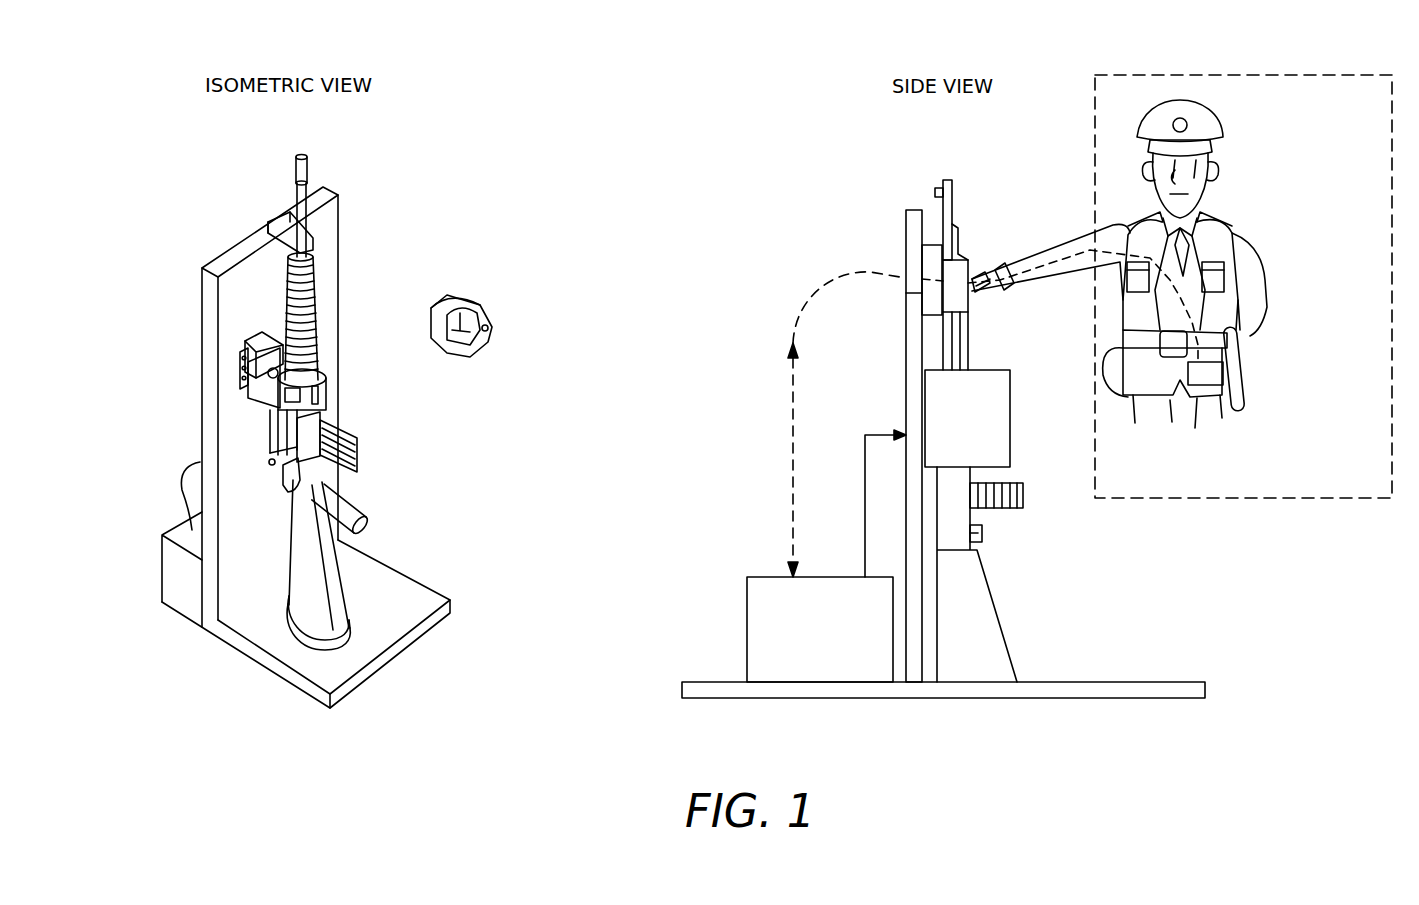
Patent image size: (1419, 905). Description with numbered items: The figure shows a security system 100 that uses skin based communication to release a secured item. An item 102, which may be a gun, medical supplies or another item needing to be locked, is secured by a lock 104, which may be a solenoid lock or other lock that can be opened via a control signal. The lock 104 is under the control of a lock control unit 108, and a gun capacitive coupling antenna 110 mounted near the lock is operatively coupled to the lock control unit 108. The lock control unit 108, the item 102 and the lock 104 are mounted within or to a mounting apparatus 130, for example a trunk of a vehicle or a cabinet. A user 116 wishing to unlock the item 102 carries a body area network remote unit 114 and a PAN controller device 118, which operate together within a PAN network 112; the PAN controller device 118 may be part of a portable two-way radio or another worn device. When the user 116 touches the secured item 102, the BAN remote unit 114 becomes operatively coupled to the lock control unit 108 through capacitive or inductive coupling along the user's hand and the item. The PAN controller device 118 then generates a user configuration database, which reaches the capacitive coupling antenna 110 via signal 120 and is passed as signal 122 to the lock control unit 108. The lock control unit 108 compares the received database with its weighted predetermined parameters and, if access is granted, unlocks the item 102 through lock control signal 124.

The security system 100 is at (1203, 731).
The item 102 is at (313, 603).
The lock 104 is at (342, 381).
The lock control unit 108 is at (160, 503).
The gun capacitive coupling antenna 110 is at (930, 267).
The PAN network 112 is at (1288, 74).
The BAN remote unit 114 is at (1191, 423).
The user 116 is at (1238, 252).
The PAN controller device 118 is at (1248, 388).
The signal 120 is at (1025, 272).
The signal 122 is at (821, 363).
The lock control signal 124 is at (864, 491).
The mounting apparatus 130 is at (243, 657).